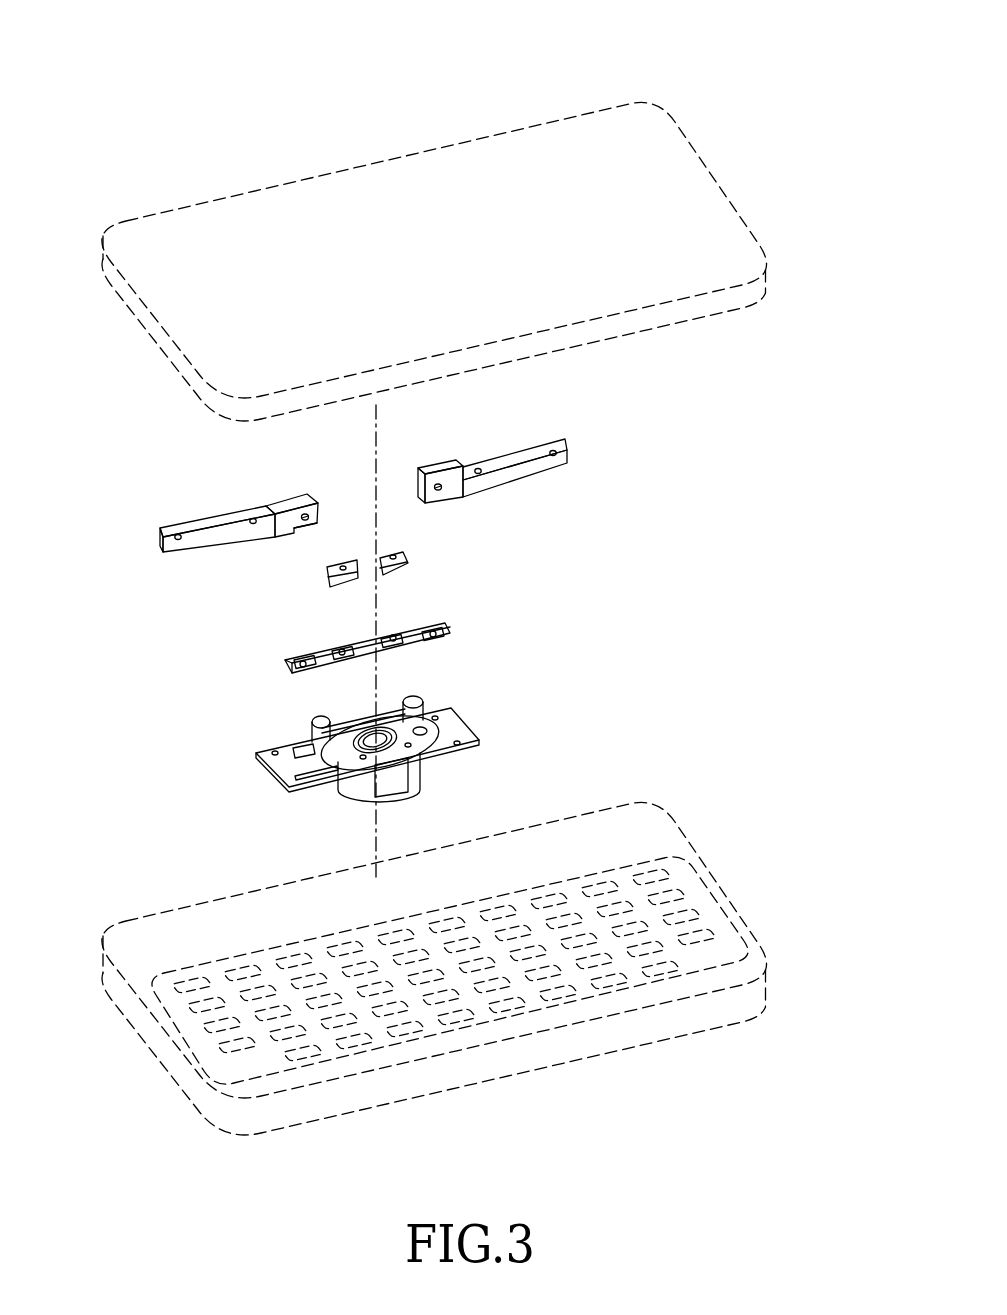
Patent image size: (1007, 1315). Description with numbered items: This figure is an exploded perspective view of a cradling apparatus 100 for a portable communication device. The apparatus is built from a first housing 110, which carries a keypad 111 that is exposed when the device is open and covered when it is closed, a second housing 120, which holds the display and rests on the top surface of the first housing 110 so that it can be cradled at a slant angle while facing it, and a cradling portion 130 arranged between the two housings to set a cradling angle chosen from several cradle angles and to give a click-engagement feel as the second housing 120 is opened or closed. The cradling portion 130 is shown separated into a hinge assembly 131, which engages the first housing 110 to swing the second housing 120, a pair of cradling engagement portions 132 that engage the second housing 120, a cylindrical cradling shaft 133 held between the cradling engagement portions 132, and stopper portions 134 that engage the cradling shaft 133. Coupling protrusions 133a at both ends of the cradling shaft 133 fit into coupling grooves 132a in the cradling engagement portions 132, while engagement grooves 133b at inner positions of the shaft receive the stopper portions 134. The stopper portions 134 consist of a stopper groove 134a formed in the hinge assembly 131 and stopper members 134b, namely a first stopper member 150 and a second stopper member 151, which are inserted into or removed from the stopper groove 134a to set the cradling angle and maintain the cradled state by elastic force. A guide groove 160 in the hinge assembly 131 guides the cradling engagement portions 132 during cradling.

The cradling apparatus 100 is at (701, 80).
The first housing 110 is at (670, 830).
The keypad 111 is at (673, 907).
The second housing 120 is at (703, 197).
The cradling portion 130 is at (688, 715).
The hinge assembly 131 is at (462, 720).
The cradling engagement portions 132 is at (182, 522).
The coupling grooves 132a is at (316, 509).
The cradling shaft 133 is at (157, 632).
The coupling protrusions 133a is at (348, 664).
The engagement grooves 133b is at (368, 632).
The stopper portions 134 is at (602, 537).
The stopper groove 134a is at (422, 698).
The stopper members 134b is at (527, 510).
The first stopper member 150 is at (408, 566).
The second stopper member 151 is at (354, 562).
The guide groove 160 is at (284, 766).